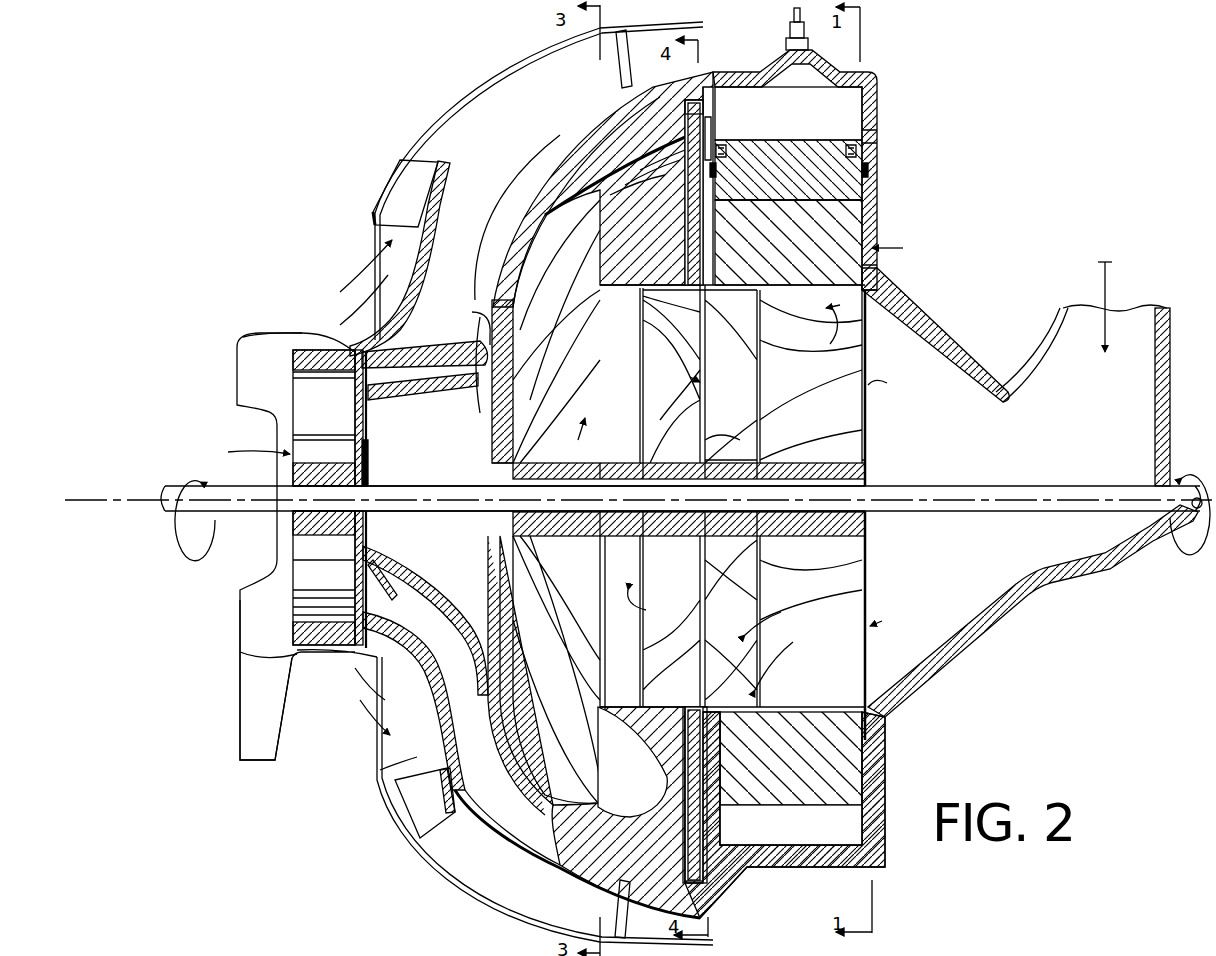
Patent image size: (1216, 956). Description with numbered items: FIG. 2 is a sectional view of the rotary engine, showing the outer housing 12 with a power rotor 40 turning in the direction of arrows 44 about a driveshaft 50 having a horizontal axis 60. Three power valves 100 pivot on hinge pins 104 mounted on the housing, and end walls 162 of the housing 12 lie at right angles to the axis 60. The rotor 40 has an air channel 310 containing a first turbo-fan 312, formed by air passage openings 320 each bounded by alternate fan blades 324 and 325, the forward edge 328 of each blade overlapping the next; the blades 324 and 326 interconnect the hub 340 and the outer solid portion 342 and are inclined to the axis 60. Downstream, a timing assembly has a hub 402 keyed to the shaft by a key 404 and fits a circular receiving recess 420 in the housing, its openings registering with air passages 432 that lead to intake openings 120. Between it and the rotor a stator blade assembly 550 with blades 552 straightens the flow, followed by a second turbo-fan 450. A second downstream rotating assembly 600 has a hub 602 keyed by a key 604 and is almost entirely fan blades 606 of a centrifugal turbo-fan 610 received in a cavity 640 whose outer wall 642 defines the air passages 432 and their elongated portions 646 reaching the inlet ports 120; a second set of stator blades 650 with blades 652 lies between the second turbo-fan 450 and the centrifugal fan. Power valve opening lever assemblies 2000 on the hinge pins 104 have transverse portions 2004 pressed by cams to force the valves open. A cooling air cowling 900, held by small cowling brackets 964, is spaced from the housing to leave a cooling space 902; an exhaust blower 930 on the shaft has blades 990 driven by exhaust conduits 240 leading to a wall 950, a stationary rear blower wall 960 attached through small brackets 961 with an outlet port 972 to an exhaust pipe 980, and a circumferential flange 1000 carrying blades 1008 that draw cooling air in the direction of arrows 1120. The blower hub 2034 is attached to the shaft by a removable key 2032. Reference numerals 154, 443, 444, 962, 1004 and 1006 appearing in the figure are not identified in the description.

The outer housing 12 is at (722, 822).
The power rotor 40 is at (899, 246).
The arrows of rotation direction 44 is at (1180, 538).
The driveshaft 50 is at (1092, 486).
The horizontal axis 60 is at (1145, 488).
The power valve 100 is at (870, 211).
The hinge pin 104 is at (865, 166).
The intake opening 120 is at (718, 126).
The seal 154 is at (870, 139).
The end wall 162 is at (860, 188).
The exhaust conduit 240 is at (474, 605).
The air channel 310 is at (868, 574).
The first turbo-fan 312 is at (893, 504).
The air passage opening 320 is at (866, 432).
The fan blade 324 is at (855, 431).
The fan blade 325 is at (811, 331).
The blade 326 is at (895, 290).
The forward edge 328 is at (866, 541).
The hub 340 is at (868, 480).
The outer solid portion 342 is at (866, 460).
The hub 402 is at (702, 430).
The key 404 is at (705, 446).
The first downstream rotating assembly receiving recess 420 is at (688, 114).
The air passage 432 is at (540, 242).
The rotor blade 443 is at (676, 375).
The rotor blade 444 is at (695, 381).
The second turbo-fan 450 is at (705, 374).
The stator blade assembly 550 is at (759, 625).
The stator blade 552 is at (790, 660).
The second downstream rotating assembly 600 is at (578, 210).
The hub 602 is at (495, 432).
The key 604 is at (497, 462).
The fan blade 606 is at (600, 386).
The centrifugal turbo-fan 610 is at (556, 546).
The centrifugal turbo-fan cavity 640 is at (648, 796).
The outer wall 642 is at (628, 176).
The elongated portion 646 is at (660, 166).
The second set of stator blades 650 is at (653, 604).
The stator blade 652 is at (660, 616).
The cooling air cowling 900 is at (420, 112).
The space 902 is at (470, 126).
The exhaust blower 930 is at (237, 455).
The wall 950 is at (345, 458).
The stationary rear blower wall 960 is at (290, 316).
The small bracket 961 is at (380, 736).
The duct wall 962 is at (380, 545).
The small cowling bracket 964 is at (618, 905).
The outlet port 972 is at (270, 648).
The exhaust pipe 980 is at (240, 690).
The blower blade 990 is at (310, 405).
The circumferential flange 1000 is at (392, 763).
The flow direction 1004 is at (1105, 276).
The duct wall 1006 is at (1062, 336).
The blade 1008 is at (415, 810).
The arrows of cooling air direction 1120 is at (372, 278).
The power valve opening lever assembly 2000 is at (718, 116).
The transverse portion 2004 is at (688, 100).
The key 2032 is at (362, 476).
The hub 2034 is at (345, 465).